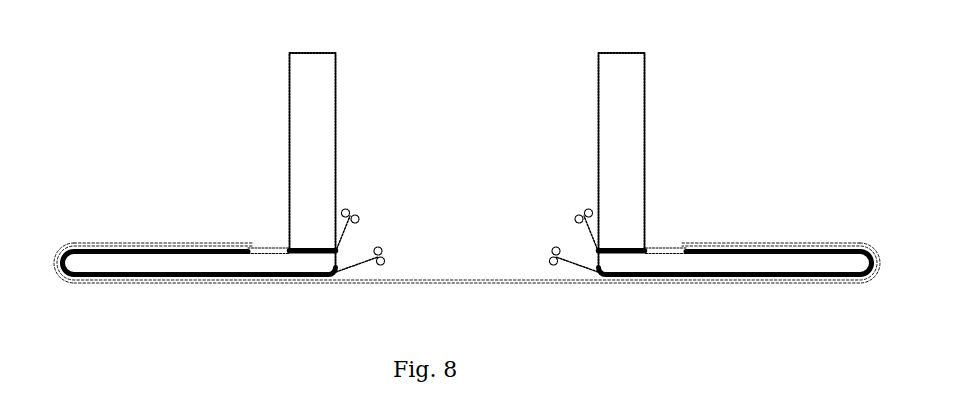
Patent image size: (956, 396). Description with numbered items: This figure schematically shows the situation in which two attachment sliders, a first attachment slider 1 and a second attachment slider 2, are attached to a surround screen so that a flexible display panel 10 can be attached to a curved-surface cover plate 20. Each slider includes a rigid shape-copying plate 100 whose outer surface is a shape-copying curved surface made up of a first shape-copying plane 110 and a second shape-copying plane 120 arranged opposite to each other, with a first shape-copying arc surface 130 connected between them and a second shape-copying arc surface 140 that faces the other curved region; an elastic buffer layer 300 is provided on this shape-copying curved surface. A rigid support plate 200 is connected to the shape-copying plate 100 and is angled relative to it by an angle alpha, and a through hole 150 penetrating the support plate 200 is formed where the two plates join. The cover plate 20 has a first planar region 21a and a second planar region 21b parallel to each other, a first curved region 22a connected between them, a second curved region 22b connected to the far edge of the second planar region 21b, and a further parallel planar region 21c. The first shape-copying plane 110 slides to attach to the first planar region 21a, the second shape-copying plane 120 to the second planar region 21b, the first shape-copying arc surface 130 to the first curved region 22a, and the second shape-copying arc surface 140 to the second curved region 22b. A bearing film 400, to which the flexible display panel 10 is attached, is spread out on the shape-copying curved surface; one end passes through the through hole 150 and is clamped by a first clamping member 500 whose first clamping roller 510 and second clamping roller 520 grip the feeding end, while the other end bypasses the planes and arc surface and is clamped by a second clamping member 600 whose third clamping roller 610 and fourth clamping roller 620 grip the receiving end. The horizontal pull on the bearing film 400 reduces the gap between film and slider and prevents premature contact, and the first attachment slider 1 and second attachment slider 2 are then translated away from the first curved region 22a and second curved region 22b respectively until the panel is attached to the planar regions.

The first attachment slider 1 is at (275, 73).
The second attachment slider 2 is at (596, 73).
The flexible display panel 10 is at (222, 249).
The curved-surface cover plate 20 is at (61, 245).
The first planar region 21a is at (143, 247).
The second planar region 21b is at (256, 284).
The first surface of second device 21c is at (791, 247).
The first curved region 22a is at (55, 272).
The second curved region 22b is at (879, 272).
The shape-copying plate 100 is at (84, 263).
The first shape-copying plane 110 is at (190, 248).
The second shape-copying plane 120 is at (144, 279).
The first shape-copying arc surface 130 is at (53, 262).
The second shape-copying arc surface 140 is at (337, 281).
The through hole 150 is at (308, 247).
The support plate 200 is at (302, 157).
The elastic buffer layer 300 is at (125, 246).
The bearing film 400 is at (253, 246).
The first clamping member 500 is at (467, 215).
The first clamping roller 510 is at (352, 210).
The second clamping roller 520 is at (360, 218).
The second clamping member 600 is at (467, 249).
The third clamping roller 610 is at (383, 249).
The fourth clamping roller 620 is at (386, 261).